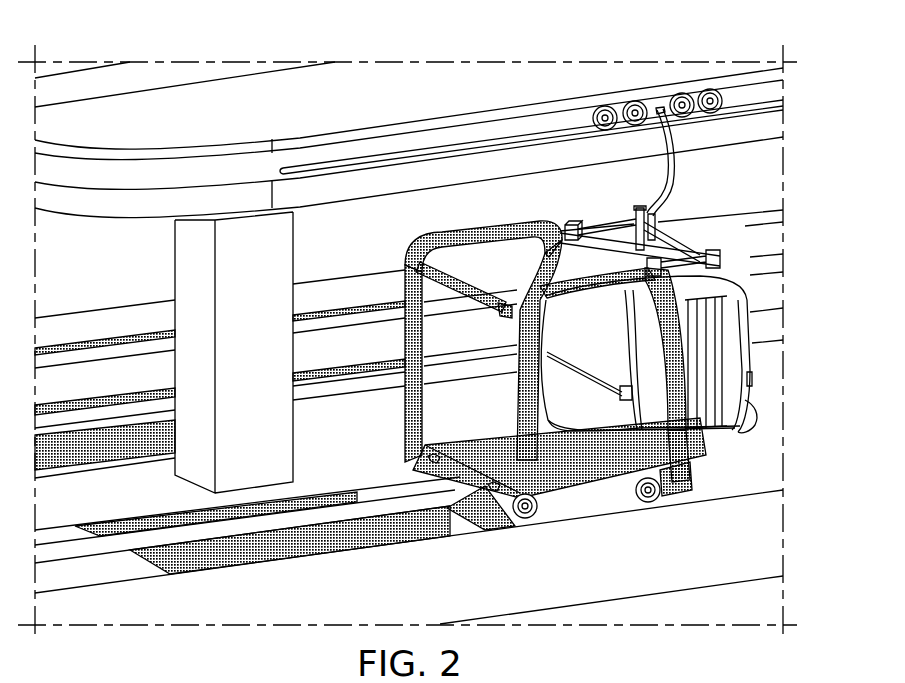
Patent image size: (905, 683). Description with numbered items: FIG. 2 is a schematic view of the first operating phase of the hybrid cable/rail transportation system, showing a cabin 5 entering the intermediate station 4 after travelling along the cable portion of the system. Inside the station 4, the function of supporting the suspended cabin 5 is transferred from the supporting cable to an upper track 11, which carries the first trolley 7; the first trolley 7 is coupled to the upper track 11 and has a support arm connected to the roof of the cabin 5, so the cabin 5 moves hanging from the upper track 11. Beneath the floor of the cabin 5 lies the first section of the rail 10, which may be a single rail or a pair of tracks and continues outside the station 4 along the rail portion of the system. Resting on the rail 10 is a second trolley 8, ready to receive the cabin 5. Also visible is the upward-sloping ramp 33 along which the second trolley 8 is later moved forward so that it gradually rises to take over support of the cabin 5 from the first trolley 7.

The intermediate station 4 is at (482, 94).
The cabin 5 is at (742, 358).
The first trolley 7 is at (676, 172).
The second trolley 8 is at (603, 502).
The rail 10 is at (247, 523).
The upper track 11 is at (540, 158).
The upward-sloping ramp 33 is at (350, 535).